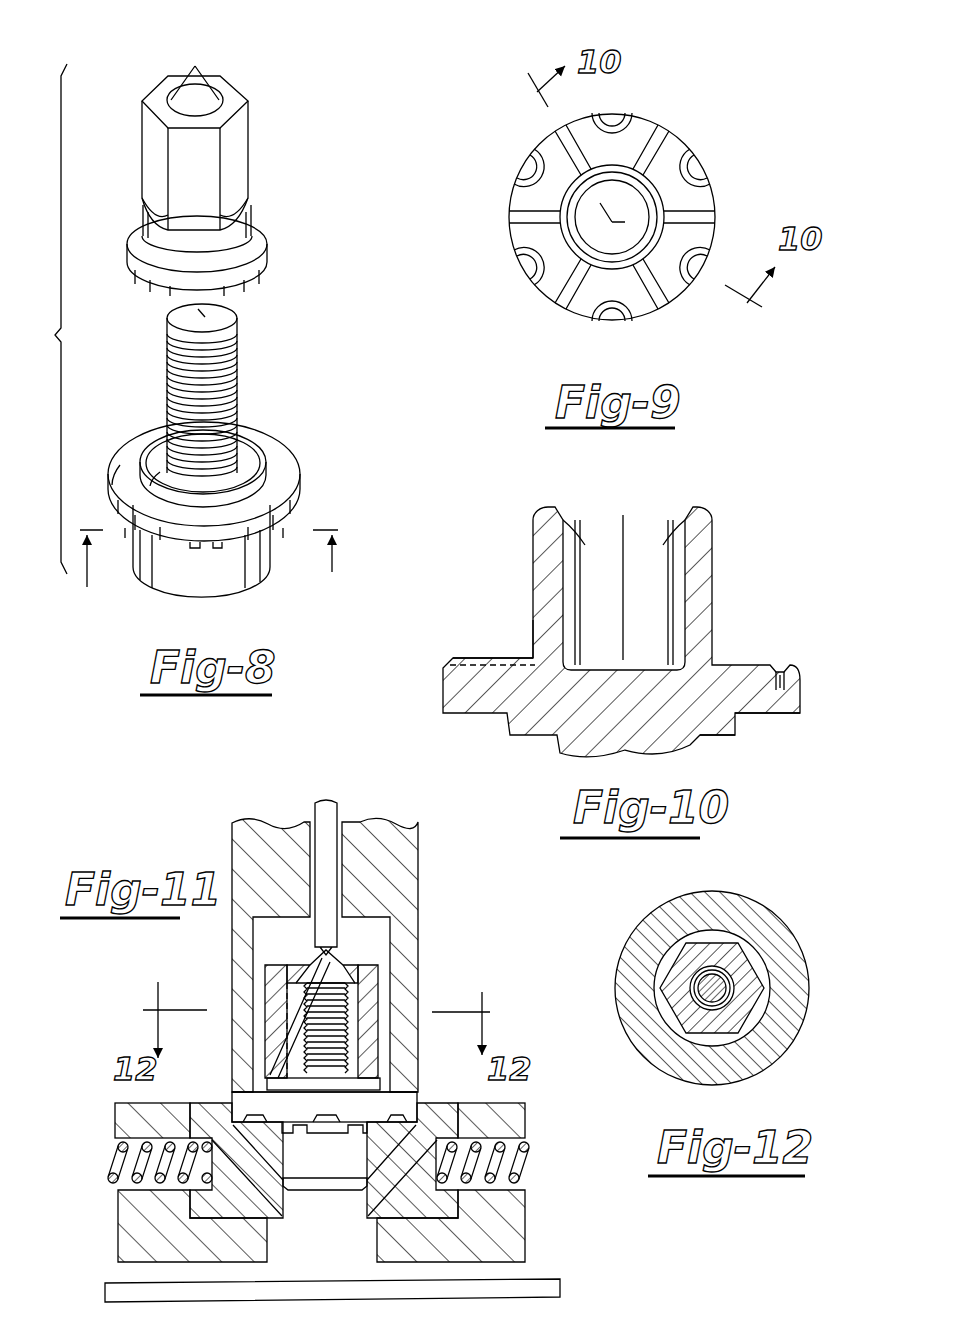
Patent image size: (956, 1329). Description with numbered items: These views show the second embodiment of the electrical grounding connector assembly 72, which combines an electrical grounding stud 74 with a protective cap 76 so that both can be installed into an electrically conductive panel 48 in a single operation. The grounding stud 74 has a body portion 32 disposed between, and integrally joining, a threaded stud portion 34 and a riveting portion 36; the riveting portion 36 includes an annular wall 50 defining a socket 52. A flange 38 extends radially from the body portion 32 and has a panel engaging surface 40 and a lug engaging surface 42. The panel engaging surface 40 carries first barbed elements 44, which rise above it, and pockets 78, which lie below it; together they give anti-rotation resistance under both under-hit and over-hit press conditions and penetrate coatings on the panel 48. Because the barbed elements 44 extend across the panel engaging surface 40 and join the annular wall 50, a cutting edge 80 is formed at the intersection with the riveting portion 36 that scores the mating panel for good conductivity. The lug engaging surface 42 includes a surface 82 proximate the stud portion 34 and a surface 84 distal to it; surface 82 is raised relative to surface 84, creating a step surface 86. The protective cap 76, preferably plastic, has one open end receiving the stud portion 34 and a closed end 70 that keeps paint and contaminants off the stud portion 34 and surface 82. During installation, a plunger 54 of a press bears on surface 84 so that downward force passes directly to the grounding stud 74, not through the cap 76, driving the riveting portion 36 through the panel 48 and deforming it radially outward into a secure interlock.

In FIG. 8, the body portion 32 is at (249, 332).
In FIG. 8, the stud portion 34 is at (248, 400).
In FIG. 11, the stud portion 34 is at (308, 1040).
In FIG. 12, the stud portion 34 is at (715, 975).
In FIG. 8, the riveting portion 36 is at (221, 582).
In FIG. 10, the riveting portion 36 is at (650, 612).
In FIG. 11, the riveting portion 36 is at (343, 1158).
In FIG. 8, the flange 38 is at (249, 490).
In FIG. 9, the flange 38 is at (576, 223).
In FIG. 10, the flange 38 is at (617, 688).
In FIG. 11, the flange 38 is at (420, 1103).
In FIG. 8, the panel engaging surface 40 is at (236, 558).
In FIG. 9, the panel engaging surface 40 is at (667, 287).
In FIG. 10, the panel engaging surface 40 is at (483, 654).
In FIG. 8, the lug engaging surface 42 is at (246, 503).
In FIG. 9, the first barbed elements 44 is at (658, 137).
In FIG. 10, the first barbed elements 44 is at (500, 657).
In FIG. 11, the electrically conductive panel 48 is at (508, 1281).
In FIG. 10, the annular wall 50 is at (697, 570).
In FIG. 10, the socket 52 is at (630, 623).
In FIG. 11, the plunger 54 is at (385, 935).
In FIG. 12, the plunger 54 is at (792, 988).
In FIG. 8, the end 70 is at (208, 61).
In FIG. 8, the electrical grounding connector assembly 72 is at (38, 319).
In FIG. 8, the electrical grounding stud 74 is at (249, 517).
In FIG. 9, the electrical grounding stud 74 is at (607, 223).
In FIG. 10, the electrical grounding stud 74 is at (621, 633).
In FIG. 8, the protective cap 76 is at (223, 150).
In FIG. 11, the protective cap 76 is at (368, 992).
In FIG. 12, the protective cap 76 is at (770, 1045).
In FIG. 8, the pockets 78 is at (200, 550).
In FIG. 9, the pockets 78 is at (607, 318).
In FIG. 10, the pockets 78 is at (846, 647).
In FIG. 10, the cutting edge 80 is at (517, 636).
In FIG. 8, the surface 82 is at (158, 458).
In FIG. 10, the surface 82 is at (715, 740).
In FIG. 11, the surface 82 is at (402, 1083).
In FIG. 8, the surface 84 is at (129, 484).
In FIG. 10, the surface 84 is at (768, 718).
In FIG. 11, the surface 84 is at (383, 1103).
In FIG. 8, the step surface 86 is at (246, 497).